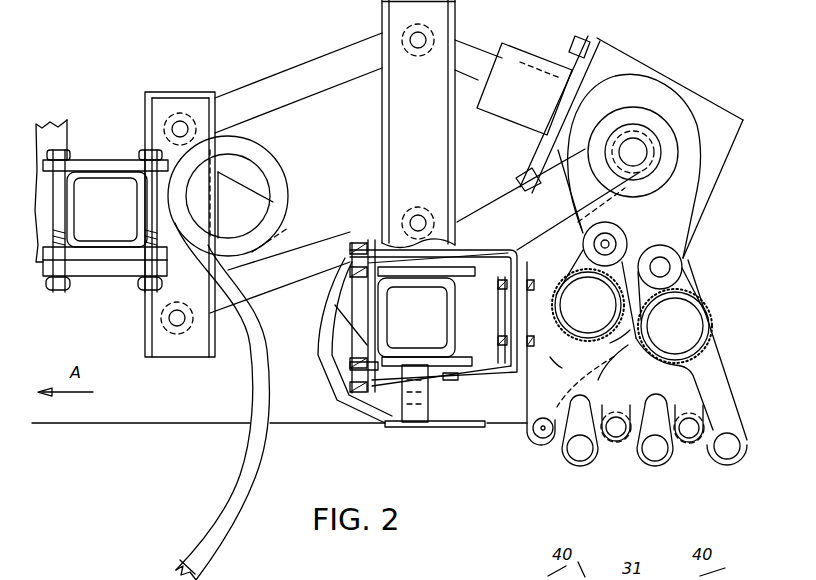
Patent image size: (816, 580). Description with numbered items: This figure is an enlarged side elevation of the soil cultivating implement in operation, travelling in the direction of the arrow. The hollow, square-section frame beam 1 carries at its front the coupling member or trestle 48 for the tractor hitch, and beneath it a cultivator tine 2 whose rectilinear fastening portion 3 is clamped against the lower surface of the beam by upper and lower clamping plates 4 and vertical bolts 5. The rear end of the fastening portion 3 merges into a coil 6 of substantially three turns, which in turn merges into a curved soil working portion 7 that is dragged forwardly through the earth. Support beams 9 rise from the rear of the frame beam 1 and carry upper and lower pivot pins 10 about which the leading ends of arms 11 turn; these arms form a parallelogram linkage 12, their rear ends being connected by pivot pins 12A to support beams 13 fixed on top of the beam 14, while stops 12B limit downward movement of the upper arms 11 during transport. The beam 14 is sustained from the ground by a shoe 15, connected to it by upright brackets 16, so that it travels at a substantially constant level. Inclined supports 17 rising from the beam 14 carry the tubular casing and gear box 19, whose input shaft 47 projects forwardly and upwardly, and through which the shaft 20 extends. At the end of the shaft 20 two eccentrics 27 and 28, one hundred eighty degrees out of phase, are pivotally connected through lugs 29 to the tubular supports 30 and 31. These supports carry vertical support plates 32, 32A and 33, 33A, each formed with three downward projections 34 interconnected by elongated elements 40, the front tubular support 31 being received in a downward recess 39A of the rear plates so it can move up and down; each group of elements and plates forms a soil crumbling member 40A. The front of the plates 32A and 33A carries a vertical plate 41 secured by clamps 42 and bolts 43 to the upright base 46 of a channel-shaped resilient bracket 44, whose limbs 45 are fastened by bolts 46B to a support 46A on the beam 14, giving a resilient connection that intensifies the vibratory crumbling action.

The frame beam 1 is at (104, 170).
The cultivator tine 2 is at (240, 452).
The fastening portion 3 is at (96, 252).
The clamping plate 4 is at (78, 162).
The bolt 5 is at (150, 185).
The coil 6 is at (263, 165).
The soil working portion 7 is at (222, 512).
The support beam 9 is at (160, 100).
The pivot pin 10 is at (180, 129).
The arm 11 is at (292, 70).
The parallelogram linkage 12 is at (336, 156).
The pivot pin 12A is at (418, 48).
The stop 12B is at (258, 203).
The support beam 13 is at (382, 112).
The beam 14 is at (416, 317).
The shoe 15 is at (312, 352).
The upright bracket 16 is at (410, 420).
The support 17 is at (476, 50).
The gear box 19 is at (708, 102).
The shaft 20 is at (636, 158).
The eccentric 27 is at (684, 208).
The eccentric 28 is at (655, 82).
The lug 29 is at (590, 248).
The tubular support 30 is at (710, 322).
The tubular support 31 is at (588, 305).
The support plate 32 is at (716, 358).
The support plate 32A is at (590, 258).
The support plate 33 is at (525, 430).
The support plate 33A is at (552, 218).
The downward projection 34 is at (587, 461).
The downward recess 39A is at (604, 396).
The elongated element 40 is at (543, 445).
The soil crumbling member 40A is at (528, 445).
The plate 41 is at (530, 302).
The clamp 42 is at (498, 342).
The bolt 43 is at (498, 288).
The resilient bracket 44 is at (505, 240).
The limb 45 is at (466, 248).
The upright base 46 is at (472, 316).
The support 46A is at (360, 322).
The bolt 46B is at (345, 242).
The input shaft 47 is at (524, 72).
The coupling member or trestle 48 is at (55, 120).